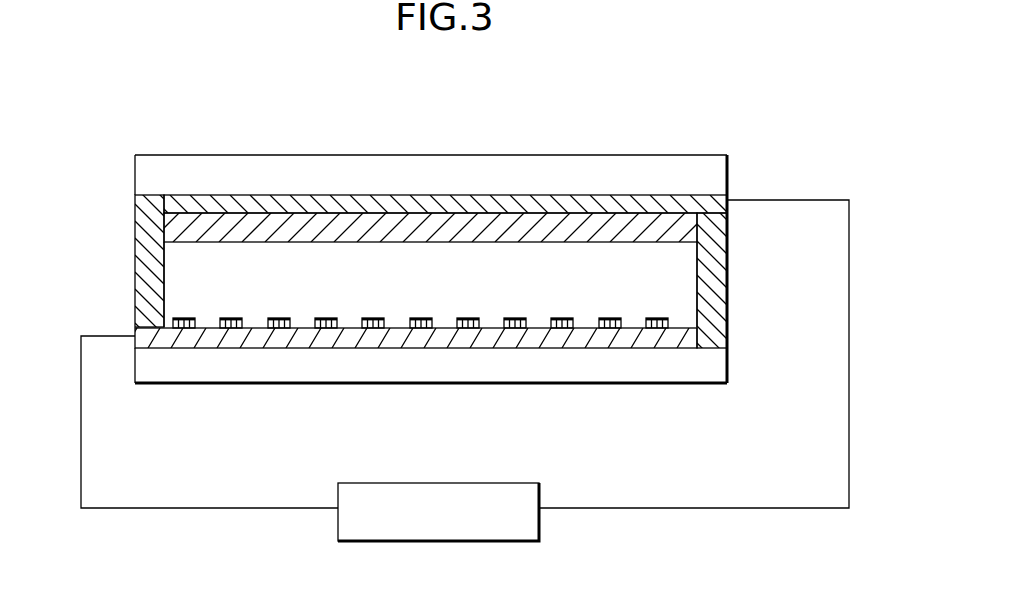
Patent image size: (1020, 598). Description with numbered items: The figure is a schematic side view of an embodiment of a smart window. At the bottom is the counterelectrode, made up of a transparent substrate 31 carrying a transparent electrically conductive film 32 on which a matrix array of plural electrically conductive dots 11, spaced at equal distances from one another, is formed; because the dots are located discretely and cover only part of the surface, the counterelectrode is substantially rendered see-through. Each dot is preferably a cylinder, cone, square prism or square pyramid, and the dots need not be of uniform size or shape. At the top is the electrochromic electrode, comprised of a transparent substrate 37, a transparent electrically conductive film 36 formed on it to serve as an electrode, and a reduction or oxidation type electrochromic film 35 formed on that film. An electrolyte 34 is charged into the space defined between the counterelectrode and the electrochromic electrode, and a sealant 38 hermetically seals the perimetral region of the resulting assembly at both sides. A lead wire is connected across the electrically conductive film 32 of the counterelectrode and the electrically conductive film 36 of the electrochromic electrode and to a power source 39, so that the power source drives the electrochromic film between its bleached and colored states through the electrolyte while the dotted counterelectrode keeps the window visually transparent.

The electrically conductive dots 11 is at (178, 320).
The transparent substrate 31 is at (238, 372).
The transparent electrically conductive film 32 is at (390, 341).
The electrolyte 34 is at (185, 262).
The electrochromic film 35 is at (573, 236).
The transparent electrically conductive film 36 is at (503, 198).
The transparent substrate 37 is at (641, 167).
The sealant 38 is at (142, 220).
The power source 39 is at (345, 493).